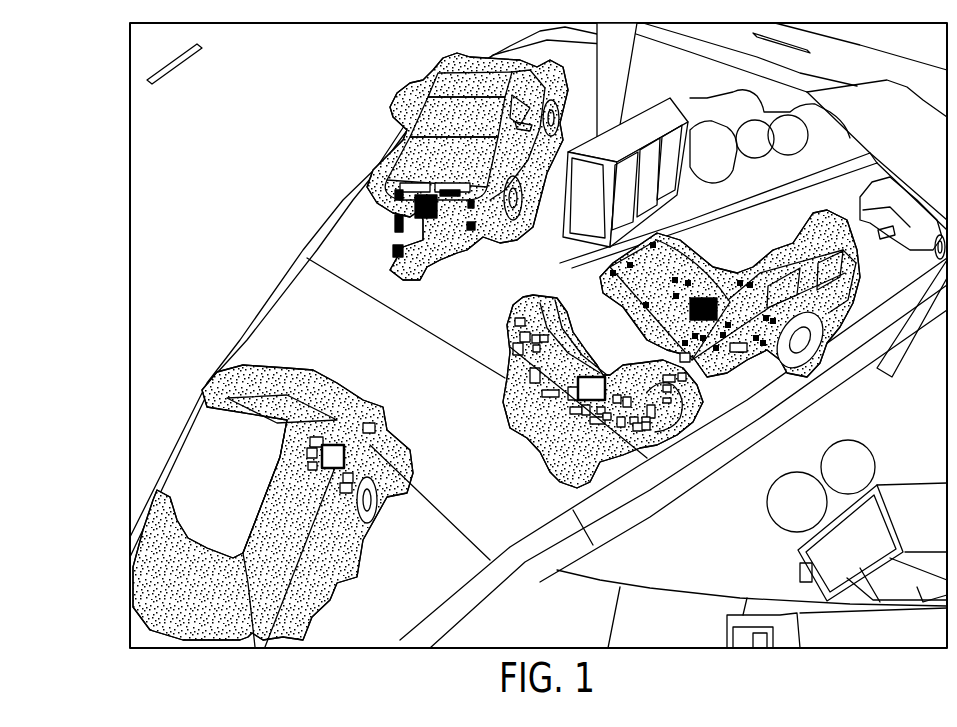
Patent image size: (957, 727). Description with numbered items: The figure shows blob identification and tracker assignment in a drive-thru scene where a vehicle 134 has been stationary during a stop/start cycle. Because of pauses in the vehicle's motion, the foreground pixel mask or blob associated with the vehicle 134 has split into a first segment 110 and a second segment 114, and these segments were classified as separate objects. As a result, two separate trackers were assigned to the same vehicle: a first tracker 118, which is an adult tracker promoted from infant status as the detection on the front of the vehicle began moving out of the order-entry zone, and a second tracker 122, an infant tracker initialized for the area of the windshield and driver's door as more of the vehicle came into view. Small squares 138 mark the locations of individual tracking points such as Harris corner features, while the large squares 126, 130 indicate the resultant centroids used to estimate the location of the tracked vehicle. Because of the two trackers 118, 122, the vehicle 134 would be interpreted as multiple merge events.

The first segment 110 is at (563, 472).
The second segment 114 is at (813, 318).
The first tracker 118 is at (665, 450).
The second tracker 122 is at (747, 408).
The tracker centroid 126 is at (610, 385).
The tracker centroid 130 is at (705, 297).
The vehicle 134 is at (601, 319).
The small squares 138 is at (475, 233).